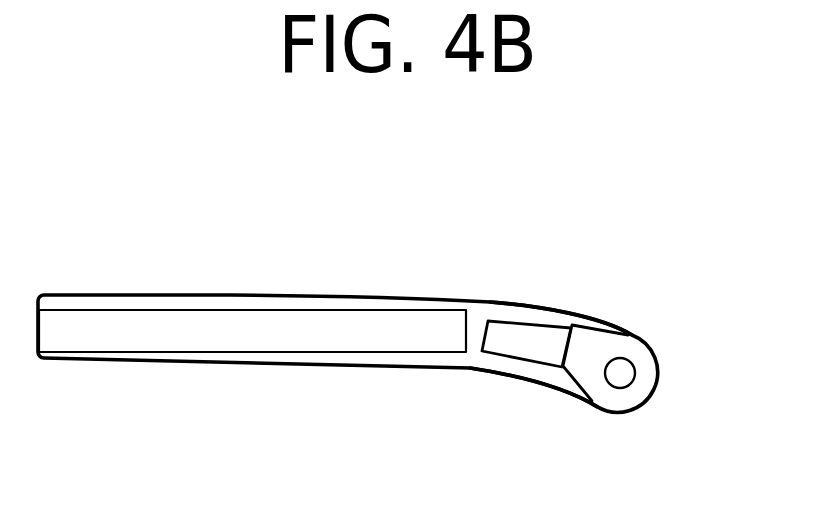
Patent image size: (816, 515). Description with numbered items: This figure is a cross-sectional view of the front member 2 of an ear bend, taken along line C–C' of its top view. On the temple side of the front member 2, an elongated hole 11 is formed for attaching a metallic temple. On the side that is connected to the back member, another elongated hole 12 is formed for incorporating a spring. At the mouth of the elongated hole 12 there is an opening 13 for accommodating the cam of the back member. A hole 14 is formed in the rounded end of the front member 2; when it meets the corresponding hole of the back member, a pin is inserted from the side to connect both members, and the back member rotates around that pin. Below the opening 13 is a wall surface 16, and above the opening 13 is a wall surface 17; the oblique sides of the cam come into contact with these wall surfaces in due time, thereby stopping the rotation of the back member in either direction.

The front member 2 is at (315, 298).
The elongated hole 11 is at (167, 318).
The elongated hole 12 is at (503, 334).
The opening 13 is at (582, 338).
The hole 14 is at (623, 370).
The wall surface 16 is at (570, 386).
The wall surface 17 is at (603, 320).